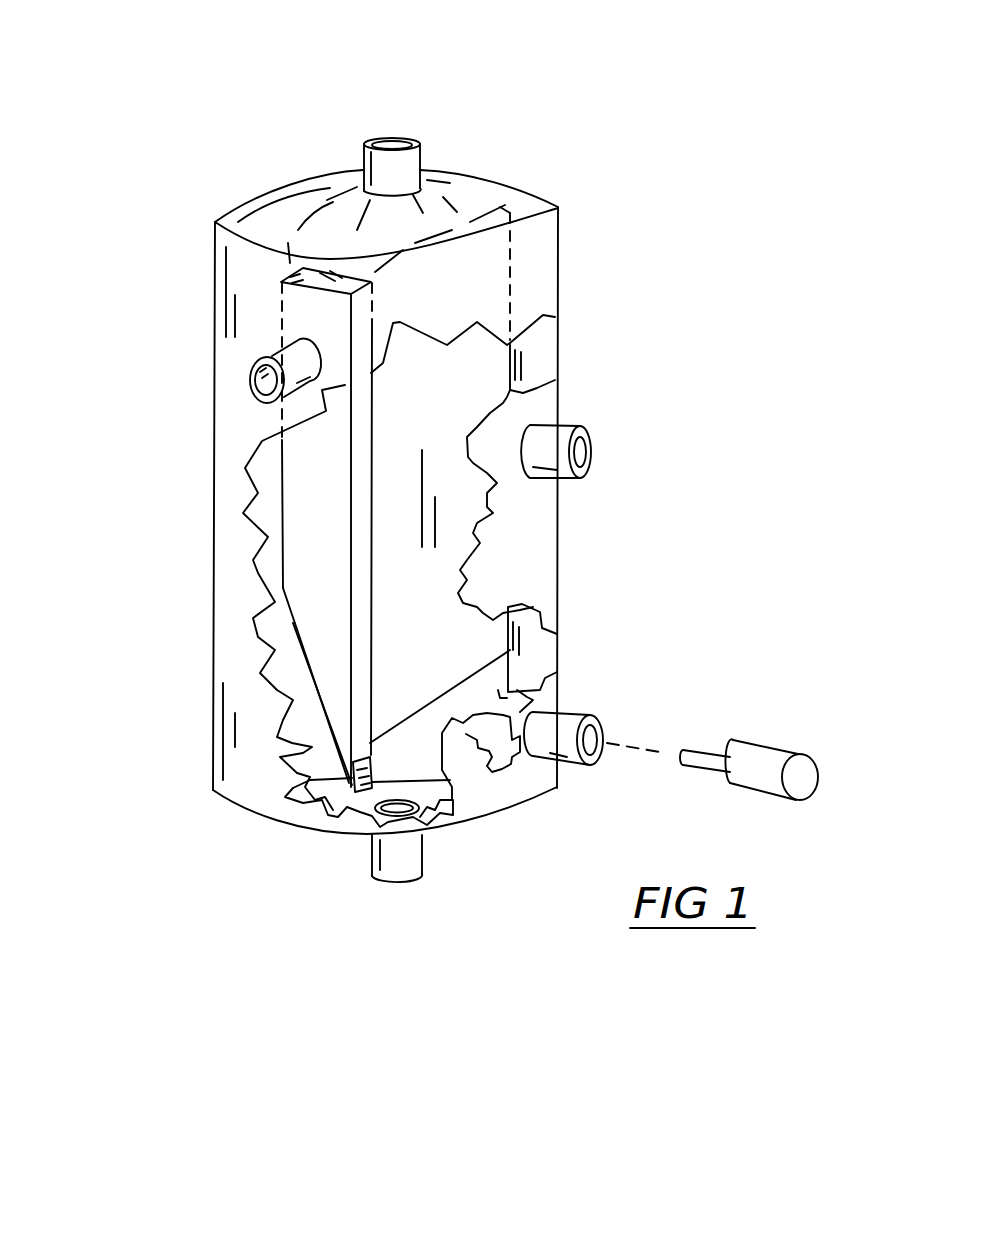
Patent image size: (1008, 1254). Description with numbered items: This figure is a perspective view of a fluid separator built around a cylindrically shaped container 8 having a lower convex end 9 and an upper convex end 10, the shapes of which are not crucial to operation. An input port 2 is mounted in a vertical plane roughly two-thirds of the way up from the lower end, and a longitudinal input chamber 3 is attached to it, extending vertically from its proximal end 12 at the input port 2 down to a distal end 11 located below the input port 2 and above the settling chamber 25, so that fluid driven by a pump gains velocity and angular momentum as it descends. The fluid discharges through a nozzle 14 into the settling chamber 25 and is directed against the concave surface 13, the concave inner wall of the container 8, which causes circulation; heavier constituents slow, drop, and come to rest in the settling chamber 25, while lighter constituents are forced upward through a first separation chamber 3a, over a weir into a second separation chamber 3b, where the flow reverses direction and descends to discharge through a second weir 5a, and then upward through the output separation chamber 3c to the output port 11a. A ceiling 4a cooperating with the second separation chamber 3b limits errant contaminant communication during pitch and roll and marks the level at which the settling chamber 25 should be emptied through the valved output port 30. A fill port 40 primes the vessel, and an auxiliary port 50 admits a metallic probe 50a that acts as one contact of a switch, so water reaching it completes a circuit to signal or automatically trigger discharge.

The container 8 is at (560, 208).
The convex end 10 is at (453, 200).
The fill port 40 is at (380, 135).
The proximal end 12 is at (287, 280).
The input port 2 is at (277, 352).
The longitudinal input chamber 3 is at (290, 540).
The first separation chamber 3a is at (283, 670).
The second separation chamber 3b is at (390, 366).
The output separation chamber 3c is at (533, 362).
The output port 11a is at (597, 440).
The ceiling 4a is at (485, 688).
The auxiliary port 50 is at (603, 727).
The metallic probe 50a is at (750, 737).
The second weir 5a is at (348, 760).
The nozzle 14 is at (358, 790).
The distal end 11 is at (370, 810).
The valved output port 30 is at (395, 880).
The convex end 9 is at (504, 840).
The concave surface 13 is at (463, 723).
The settling chamber 25 is at (516, 785).